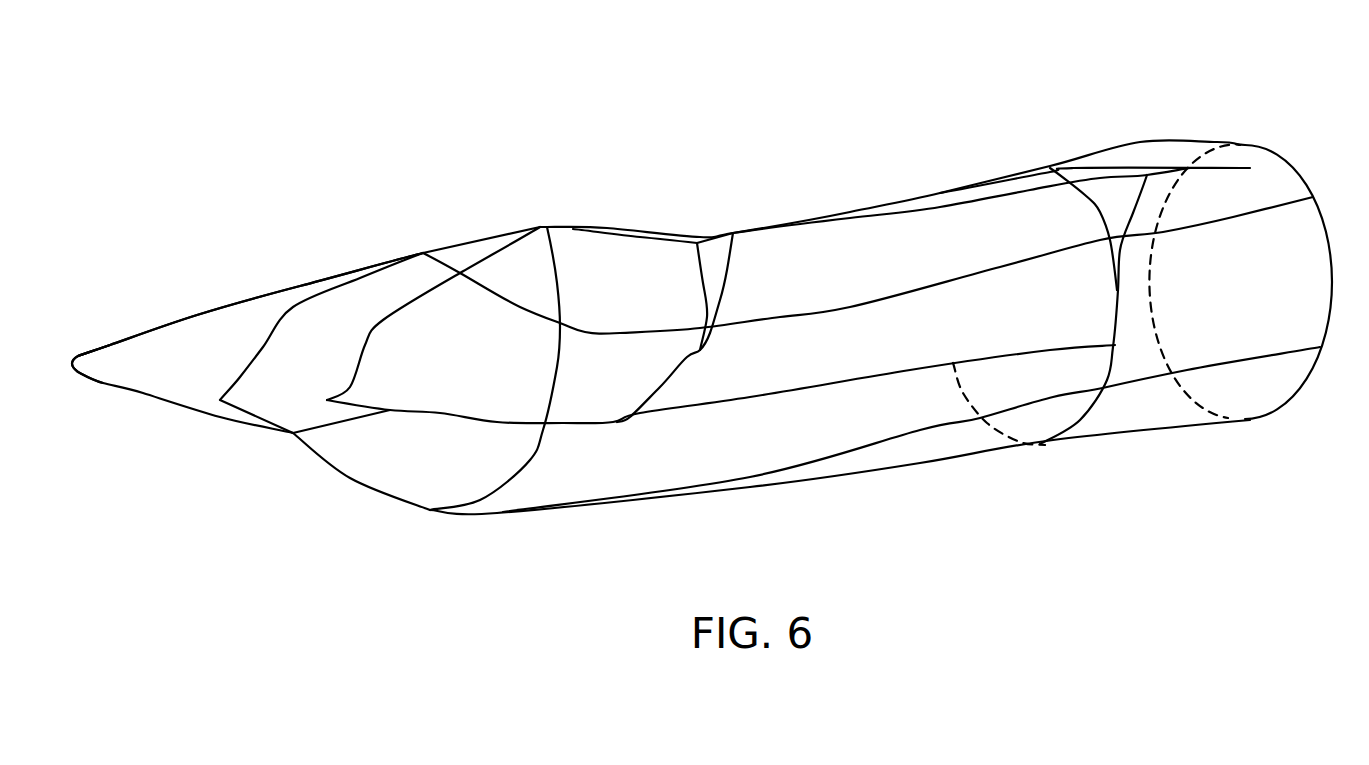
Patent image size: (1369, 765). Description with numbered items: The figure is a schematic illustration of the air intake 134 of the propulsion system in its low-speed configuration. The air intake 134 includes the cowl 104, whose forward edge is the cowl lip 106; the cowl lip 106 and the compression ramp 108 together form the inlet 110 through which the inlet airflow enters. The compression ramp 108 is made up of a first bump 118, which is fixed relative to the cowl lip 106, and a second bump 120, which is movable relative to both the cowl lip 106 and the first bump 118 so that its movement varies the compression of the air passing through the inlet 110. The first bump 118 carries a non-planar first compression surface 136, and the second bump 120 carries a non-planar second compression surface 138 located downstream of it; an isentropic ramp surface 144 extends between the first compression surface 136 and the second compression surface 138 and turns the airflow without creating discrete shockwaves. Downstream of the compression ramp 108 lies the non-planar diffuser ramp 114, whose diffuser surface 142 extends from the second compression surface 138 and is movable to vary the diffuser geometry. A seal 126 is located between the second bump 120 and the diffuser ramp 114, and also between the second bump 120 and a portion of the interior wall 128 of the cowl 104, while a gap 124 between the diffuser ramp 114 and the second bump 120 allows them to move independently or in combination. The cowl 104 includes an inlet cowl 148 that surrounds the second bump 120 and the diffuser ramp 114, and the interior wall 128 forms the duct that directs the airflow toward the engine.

The cowl 104 is at (1130, 449).
The cowl lip 106 is at (437, 507).
The compression ramp 108 is at (516, 218).
The inlet 110 is at (352, 459).
The diffuser ramp 114 is at (924, 212).
The first bump 118 is at (200, 317).
The second bump 120 is at (583, 258).
The gap 124 is at (710, 262).
The seal 126 is at (667, 236).
The interior wall 128 is at (822, 310).
The air intake 134 is at (201, 176).
The first compression surface 136 is at (155, 383).
The second compression surface 138 is at (453, 395).
The diffuser surface 142 is at (956, 270).
The isentropic ramp surface 144 is at (275, 363).
The inlet cowl 148 is at (770, 488).